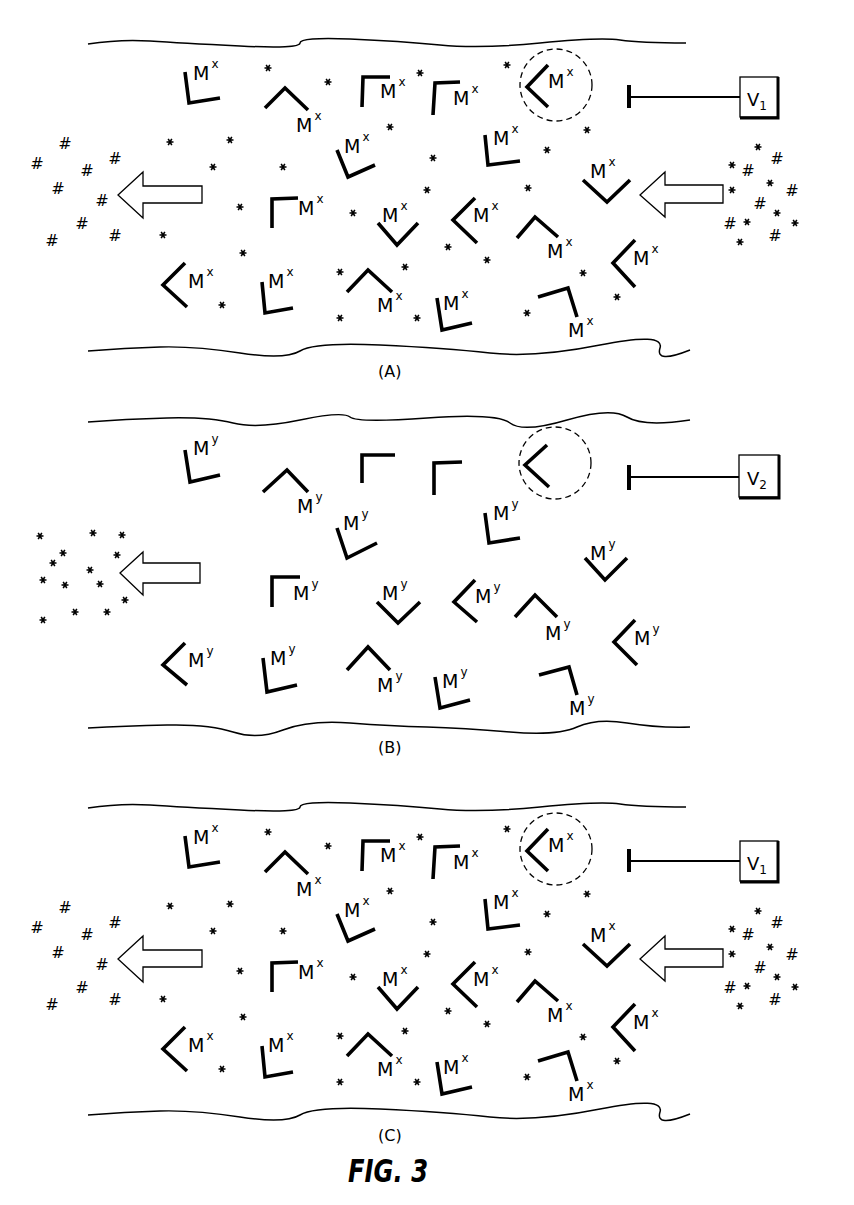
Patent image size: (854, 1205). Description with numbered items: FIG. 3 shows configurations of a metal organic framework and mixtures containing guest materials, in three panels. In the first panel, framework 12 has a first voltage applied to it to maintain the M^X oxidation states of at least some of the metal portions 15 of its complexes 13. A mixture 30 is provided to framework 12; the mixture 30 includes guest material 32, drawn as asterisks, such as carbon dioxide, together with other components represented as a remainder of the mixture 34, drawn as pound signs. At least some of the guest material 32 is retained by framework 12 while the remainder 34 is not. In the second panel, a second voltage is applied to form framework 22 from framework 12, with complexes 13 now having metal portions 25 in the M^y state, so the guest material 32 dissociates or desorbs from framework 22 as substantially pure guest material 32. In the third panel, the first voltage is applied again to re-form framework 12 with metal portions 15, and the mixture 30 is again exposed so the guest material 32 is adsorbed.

The framework 12 is at (389, 574).
The complexes 13 is at (590, 450).
The metal portions 15 is at (429, 450).
The framework 22 is at (267, 458).
The metal portions 25 is at (450, 462).
The mixture 30 is at (760, 614).
The guest material 32 is at (120, 533).
The remainder of the mixture 34 is at (75, 546).